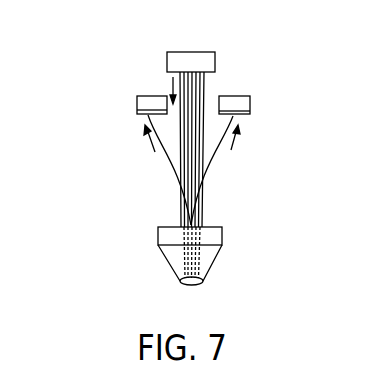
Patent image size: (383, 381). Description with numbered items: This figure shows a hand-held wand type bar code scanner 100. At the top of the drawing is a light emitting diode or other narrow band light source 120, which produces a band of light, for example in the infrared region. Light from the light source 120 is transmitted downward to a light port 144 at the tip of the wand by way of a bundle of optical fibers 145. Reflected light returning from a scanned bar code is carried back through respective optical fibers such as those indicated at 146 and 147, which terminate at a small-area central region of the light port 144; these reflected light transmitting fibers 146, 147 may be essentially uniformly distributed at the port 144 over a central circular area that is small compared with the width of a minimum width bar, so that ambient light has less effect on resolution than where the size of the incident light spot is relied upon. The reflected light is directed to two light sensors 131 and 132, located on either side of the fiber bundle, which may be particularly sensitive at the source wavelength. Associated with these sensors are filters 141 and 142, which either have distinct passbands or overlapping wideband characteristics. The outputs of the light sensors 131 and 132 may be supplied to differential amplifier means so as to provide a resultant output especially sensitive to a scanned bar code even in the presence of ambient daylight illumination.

The hand-held wand type scanner 100 is at (150, 242).
The narrow band light source 120 is at (200, 52).
The light sensor 131 is at (137, 100).
The light sensor 132 is at (251, 100).
The filter 141 is at (137, 112).
The filter 142 is at (251, 112).
The light port 144 is at (203, 286).
The optical fibers 145 is at (200, 95).
The optical fiber 146 is at (167, 158).
The optical fiber 147 is at (213, 160).